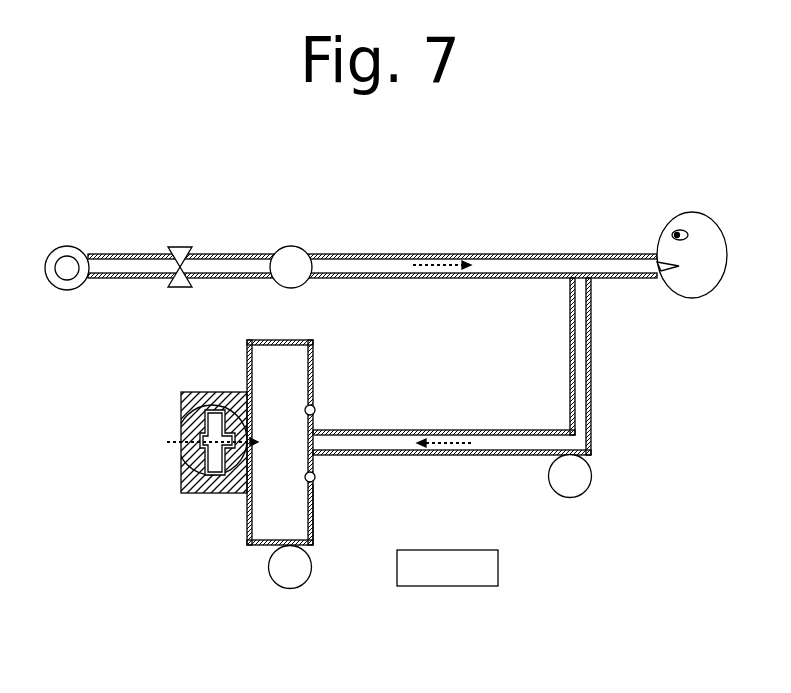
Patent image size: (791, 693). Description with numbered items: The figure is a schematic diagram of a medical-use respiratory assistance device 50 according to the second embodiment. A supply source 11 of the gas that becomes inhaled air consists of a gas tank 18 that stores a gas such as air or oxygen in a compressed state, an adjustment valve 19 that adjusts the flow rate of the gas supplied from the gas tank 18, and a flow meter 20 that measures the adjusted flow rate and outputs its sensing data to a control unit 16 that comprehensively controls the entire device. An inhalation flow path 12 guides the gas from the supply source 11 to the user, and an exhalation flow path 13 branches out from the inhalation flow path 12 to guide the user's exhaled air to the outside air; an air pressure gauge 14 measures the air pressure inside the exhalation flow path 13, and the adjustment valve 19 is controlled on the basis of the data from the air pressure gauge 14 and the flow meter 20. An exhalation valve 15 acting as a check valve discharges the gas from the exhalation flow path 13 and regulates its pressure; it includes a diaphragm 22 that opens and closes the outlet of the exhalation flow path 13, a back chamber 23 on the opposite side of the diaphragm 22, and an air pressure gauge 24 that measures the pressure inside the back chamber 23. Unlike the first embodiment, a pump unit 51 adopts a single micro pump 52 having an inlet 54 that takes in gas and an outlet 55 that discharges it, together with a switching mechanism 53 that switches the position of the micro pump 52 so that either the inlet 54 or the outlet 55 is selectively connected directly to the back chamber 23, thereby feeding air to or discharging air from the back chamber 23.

The supply source 11 is at (230, 218).
The inhalation flow path 12 is at (531, 254).
The exhalation flow path 13 is at (530, 430).
The air pressure gauge 14 is at (570, 498).
The exhalation valve 15 is at (297, 337).
The control unit 16 is at (447, 550).
The gas tank 18 is at (66, 246).
The adjustment valve 19 is at (181, 247).
The flow meter 20 is at (290, 246).
The diaphragm 22 is at (314, 462).
The back chamber 23 is at (314, 510).
The air pressure gauge 24 is at (290, 589).
The respiratory assistance device 50 is at (615, 193).
The pump unit 51 is at (192, 372).
The micro pump 52 is at (215, 392).
The switching mechanism 53 is at (217, 494).
The inlet 54 is at (167, 442).
The outlet 55 is at (258, 444).